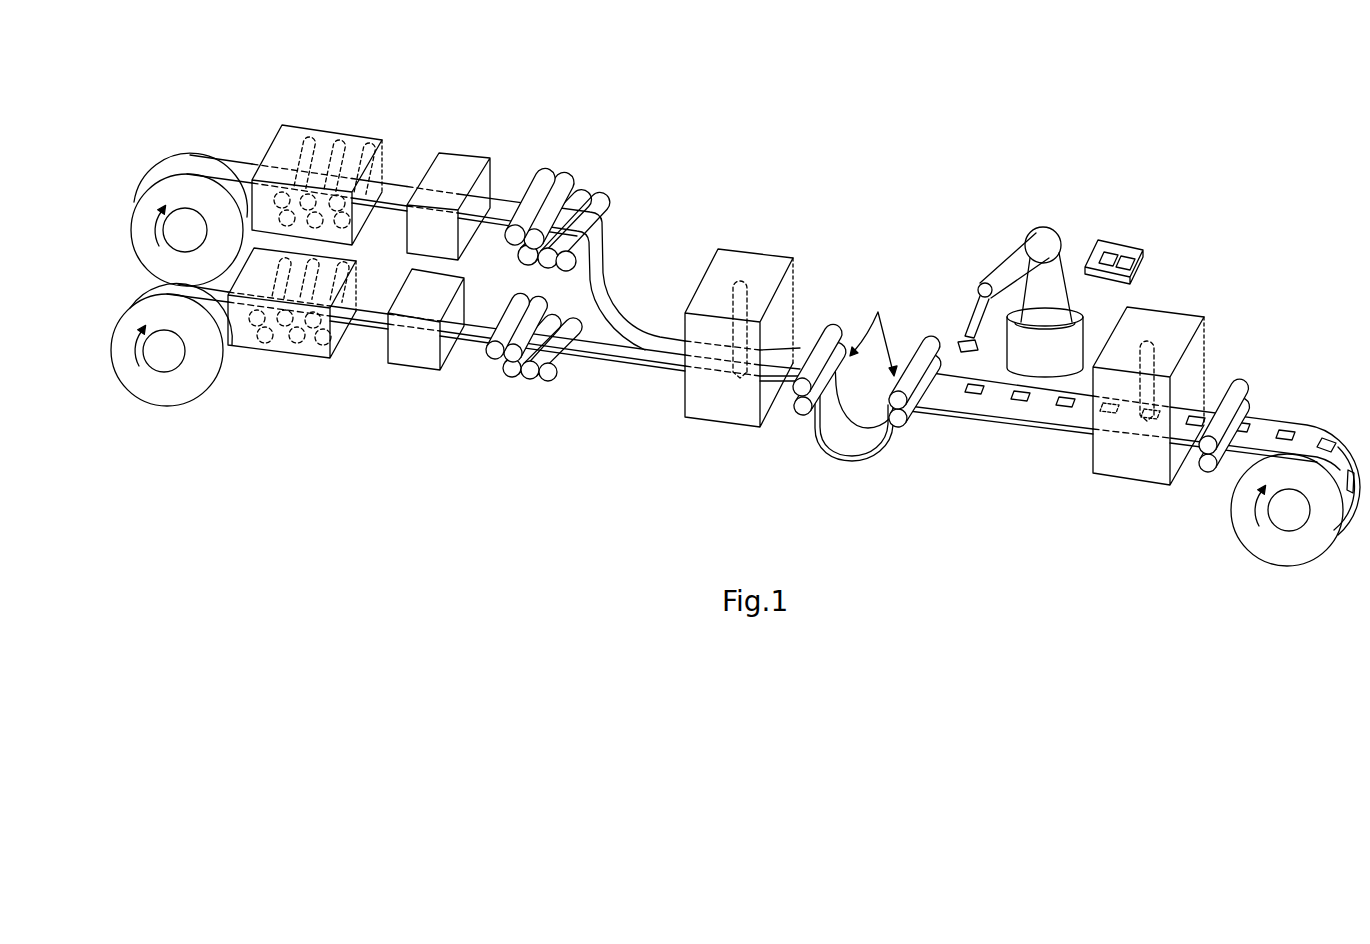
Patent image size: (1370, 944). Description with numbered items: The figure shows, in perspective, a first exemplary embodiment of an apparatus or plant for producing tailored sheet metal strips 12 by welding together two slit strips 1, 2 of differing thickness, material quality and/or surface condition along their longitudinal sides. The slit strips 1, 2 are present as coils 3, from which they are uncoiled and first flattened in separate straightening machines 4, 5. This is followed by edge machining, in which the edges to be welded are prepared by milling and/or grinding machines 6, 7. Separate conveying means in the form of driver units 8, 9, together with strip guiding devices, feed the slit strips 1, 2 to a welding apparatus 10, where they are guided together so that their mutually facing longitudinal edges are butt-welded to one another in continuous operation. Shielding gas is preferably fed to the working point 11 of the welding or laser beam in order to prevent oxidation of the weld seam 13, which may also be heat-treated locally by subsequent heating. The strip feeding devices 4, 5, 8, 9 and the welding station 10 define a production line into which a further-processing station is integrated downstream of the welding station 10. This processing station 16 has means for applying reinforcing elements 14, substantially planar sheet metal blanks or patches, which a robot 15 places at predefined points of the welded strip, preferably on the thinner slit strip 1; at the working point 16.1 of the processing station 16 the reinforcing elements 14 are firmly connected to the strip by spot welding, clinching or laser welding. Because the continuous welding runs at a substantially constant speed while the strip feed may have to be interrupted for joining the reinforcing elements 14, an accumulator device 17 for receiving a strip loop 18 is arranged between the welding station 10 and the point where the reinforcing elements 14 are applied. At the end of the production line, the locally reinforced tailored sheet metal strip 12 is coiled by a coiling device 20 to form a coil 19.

The slit strip 1 is at (233, 167).
The slit strip 2 is at (152, 290).
The coil 3 is at (174, 190).
The straightening machine 4 is at (329, 132).
The straightening machine 5 is at (313, 347).
The milling and/or grinding machine 6 is at (462, 163).
The milling and/or grinding machine 7 is at (417, 358).
The conveying means (driver unit) 8 is at (582, 197).
The conveying means (driver unit) 9 is at (532, 372).
The welding apparatus 10 is at (752, 262).
The working point 11 is at (733, 374).
The tailored sheet metal strip 12 is at (955, 387).
The weld seam 13 is at (793, 370).
The reinforcing element 14 is at (960, 340).
The robot 15 is at (1043, 230).
The processing station for joining the reinforcing elements 16 is at (1168, 318).
The working point 16.1 is at (1148, 397).
The accumulator device 17 is at (878, 324).
The strip loop 18 is at (852, 437).
The coil 19 is at (1258, 548).
The coiling device 20 is at (1293, 522).